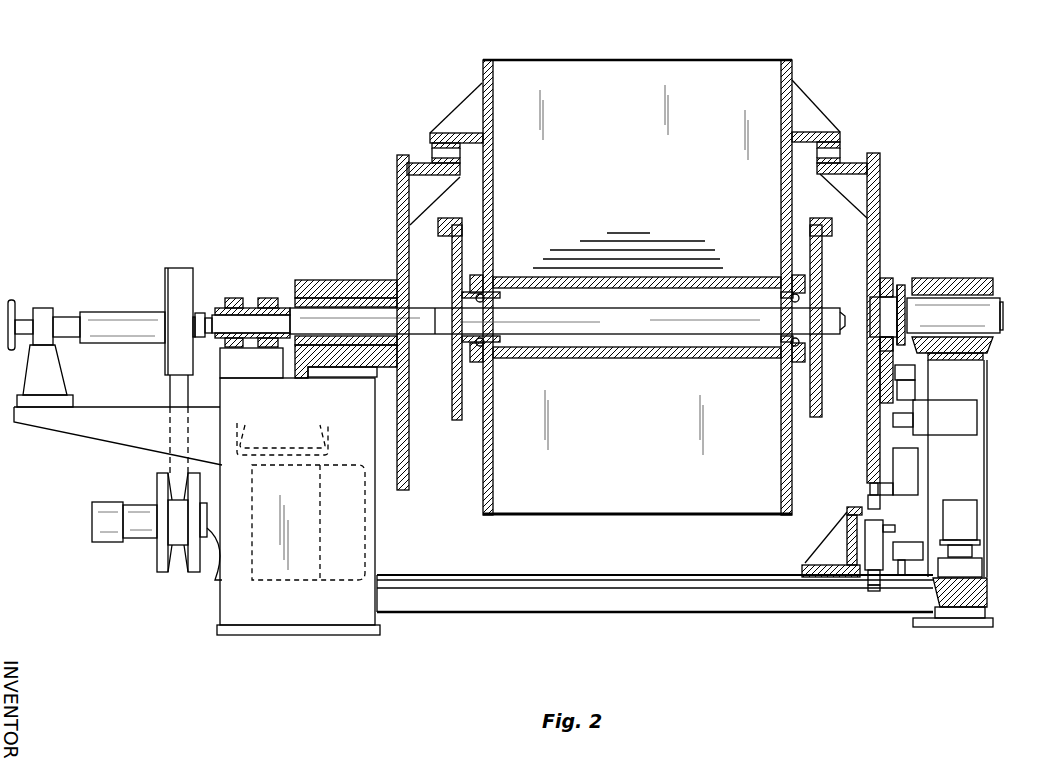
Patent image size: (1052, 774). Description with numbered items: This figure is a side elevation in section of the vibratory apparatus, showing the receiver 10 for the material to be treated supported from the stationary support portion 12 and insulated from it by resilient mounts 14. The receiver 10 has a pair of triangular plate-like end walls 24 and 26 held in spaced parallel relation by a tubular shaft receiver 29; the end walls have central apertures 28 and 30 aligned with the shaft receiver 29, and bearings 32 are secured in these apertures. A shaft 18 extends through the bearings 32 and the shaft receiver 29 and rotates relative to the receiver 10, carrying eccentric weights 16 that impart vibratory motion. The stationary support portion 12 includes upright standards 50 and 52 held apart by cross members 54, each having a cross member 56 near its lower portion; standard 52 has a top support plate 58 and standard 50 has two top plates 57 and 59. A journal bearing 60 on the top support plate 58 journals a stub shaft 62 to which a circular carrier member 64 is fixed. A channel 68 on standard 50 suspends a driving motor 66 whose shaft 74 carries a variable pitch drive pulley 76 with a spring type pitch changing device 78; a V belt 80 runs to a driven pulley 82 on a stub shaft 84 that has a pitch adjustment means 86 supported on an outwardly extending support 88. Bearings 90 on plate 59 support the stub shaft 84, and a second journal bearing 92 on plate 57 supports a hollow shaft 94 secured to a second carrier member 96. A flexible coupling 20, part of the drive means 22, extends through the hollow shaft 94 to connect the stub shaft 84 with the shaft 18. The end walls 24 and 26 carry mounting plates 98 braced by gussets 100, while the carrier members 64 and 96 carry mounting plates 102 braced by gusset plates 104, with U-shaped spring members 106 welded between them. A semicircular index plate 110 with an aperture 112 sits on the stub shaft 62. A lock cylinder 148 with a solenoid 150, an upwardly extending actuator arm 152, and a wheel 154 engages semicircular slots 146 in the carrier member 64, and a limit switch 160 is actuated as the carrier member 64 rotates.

The receiver 10 is at (635, 269).
The stationary support portion 12 is at (908, 272).
The resilient mounts 14 is at (846, 146).
The eccentric weights 16 is at (452, 265).
The shaft 18 is at (598, 330).
The flexible coupling 20 is at (290, 310).
The drive means 22 is at (148, 459).
The end wall 24 is at (792, 65).
The end wall 26 is at (482, 68).
The central aperture 28 is at (780, 294).
The tubular shaft receiver 29 is at (648, 280).
The central aperture 30 is at (502, 297).
The bearings 32 is at (478, 275).
The upright standard 50 is at (376, 520).
The upright standard 52 is at (988, 460).
The cross members 54 is at (590, 612).
The cross member 56 is at (988, 590).
The top plate 57 is at (355, 378).
The top support plate 58 is at (966, 362).
The top plate 59 is at (251, 385).
The journal bearing 60 is at (972, 278).
The stub shaft 62 is at (1003, 314).
The carrier member 64 is at (880, 201).
The driving motor 66 is at (318, 486).
The channel 68 is at (268, 455).
The motor shaft 74 is at (208, 568).
The variable pitch drive pulley 76 is at (157, 560).
The spring type pitch changing device 78 is at (92, 522).
The V belt 80 is at (168, 390).
The driven pulley 82 is at (164, 282).
The stub shaft 84 is at (201, 312).
The pitch adjustment means 86 is at (116, 312).
The outwardly extending support 88 is at (62, 430).
The bearings 90 is at (232, 348).
The second journal bearing 92 is at (345, 368).
The hollow shaft 94 is at (345, 282).
The second carrier member 96 is at (397, 162).
The mounting plates 98 is at (437, 133).
The gussets 100 is at (462, 100).
The mounting plates 102 is at (415, 178).
The gusset plates 104 is at (438, 197).
The U-shaped spring members 106 is at (432, 146).
The semicircular index plate 110 is at (886, 280).
The aperture 112 is at (870, 310).
The semicircular slots 146 is at (868, 486).
The lock cylinder 148 is at (886, 570).
The solenoid 150 is at (872, 592).
The actuator arm 152 is at (847, 510).
The wheel 154 is at (866, 500).
The limit switch 160 is at (918, 470).